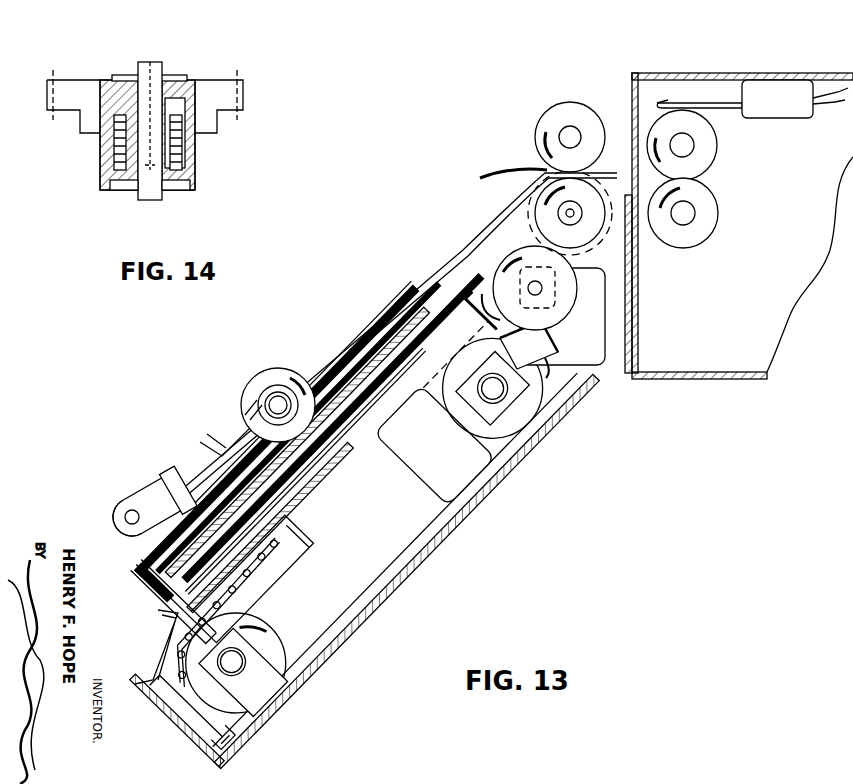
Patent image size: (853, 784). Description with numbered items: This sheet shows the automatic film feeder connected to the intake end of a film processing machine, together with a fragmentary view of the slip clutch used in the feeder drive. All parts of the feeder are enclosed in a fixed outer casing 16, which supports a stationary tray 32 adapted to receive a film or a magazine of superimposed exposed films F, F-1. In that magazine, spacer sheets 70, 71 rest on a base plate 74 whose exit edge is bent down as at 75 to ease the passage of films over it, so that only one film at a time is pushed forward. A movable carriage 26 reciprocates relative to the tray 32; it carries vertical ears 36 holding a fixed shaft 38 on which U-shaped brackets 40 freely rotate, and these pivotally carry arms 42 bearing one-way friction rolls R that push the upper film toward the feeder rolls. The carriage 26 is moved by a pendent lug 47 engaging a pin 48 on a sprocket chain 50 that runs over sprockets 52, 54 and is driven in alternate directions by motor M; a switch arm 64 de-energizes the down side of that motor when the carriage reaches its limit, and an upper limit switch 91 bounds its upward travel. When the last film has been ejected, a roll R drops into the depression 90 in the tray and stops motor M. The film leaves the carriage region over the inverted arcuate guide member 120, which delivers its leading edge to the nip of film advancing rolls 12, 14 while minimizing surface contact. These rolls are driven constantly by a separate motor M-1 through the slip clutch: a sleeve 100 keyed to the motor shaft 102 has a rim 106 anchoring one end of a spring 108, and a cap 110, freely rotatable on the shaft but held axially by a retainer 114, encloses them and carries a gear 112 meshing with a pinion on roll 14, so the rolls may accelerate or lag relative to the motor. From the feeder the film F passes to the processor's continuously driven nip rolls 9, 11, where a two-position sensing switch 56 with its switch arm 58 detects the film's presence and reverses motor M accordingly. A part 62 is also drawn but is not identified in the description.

In FIG. 14, the gear 112 is at (76, 85).
In FIG. 13, the gear 112 is at (622, 228).
In FIG. 14, the retainer 114 is at (120, 76).
In FIG. 14, the shaft 102 is at (152, 66).
In FIG. 14, the sleeve 100 is at (185, 100).
In FIG. 14, the spring 108 is at (178, 152).
In FIG. 14, the rim 106 is at (180, 196).
In FIG. 14, the cap 110 is at (106, 150).
In FIG. 13, the film advancing roll 12 is at (573, 103).
In FIG. 13, the film advancing roll 14 is at (534, 218).
In FIG. 13, the inverted arcuate guide member 120 is at (492, 176).
In FIG. 13, the film F is at (463, 250).
In FIG. 13, the switch arm 58 is at (700, 104).
In FIG. 13, the two-position sensing switch 56 is at (782, 86).
In FIG. 13, the film receiving and advancing nip roll 9 is at (712, 148).
In FIG. 13, the film receiving and advancing nip roll 11 is at (712, 228).
In FIG. 13, the spacer sheet 70 is at (414, 284).
In FIG. 13, the spacer sheet 71 is at (428, 290).
In FIG. 13, the one-way friction roll R is at (278, 368).
In FIG. 13, the bent-down exit edge 75 is at (482, 295).
In FIG. 13, the upper limit switch 91 is at (538, 342).
In FIG. 13, the stationary tray 32 is at (400, 350).
In FIG. 13, the film F-1 is at (406, 380).
In FIG. 13, the motor M-1 is at (597, 382).
In FIG. 13, the U-shaped bracket 40 is at (146, 494).
In FIG. 13, the arm 42 is at (185, 470).
In FIG. 13, the base plate 74 is at (351, 413).
In FIG. 13, the depression 90 is at (308, 466).
In FIG. 13, the vertical ear 36 is at (113, 514).
In FIG. 13, the fixed shaft 38 is at (128, 523).
In FIG. 13, the pendent lug 47 is at (297, 503).
In FIG. 13, the motor M is at (396, 452).
In FIG. 13, the sprocket 52 is at (524, 440).
In FIG. 13, the movable carriage 26 is at (300, 526).
In FIG. 13, the pin 48 is at (265, 560).
In FIG. 13, the fixed outer casing 16 is at (418, 568).
In FIG. 13, the switch arm 64 is at (160, 620).
In FIG. 13, the sprocket chain 50 is at (172, 712).
In FIG. 13, the bracket 62 is at (200, 750).
In FIG. 13, the sprocket 54 is at (250, 727).